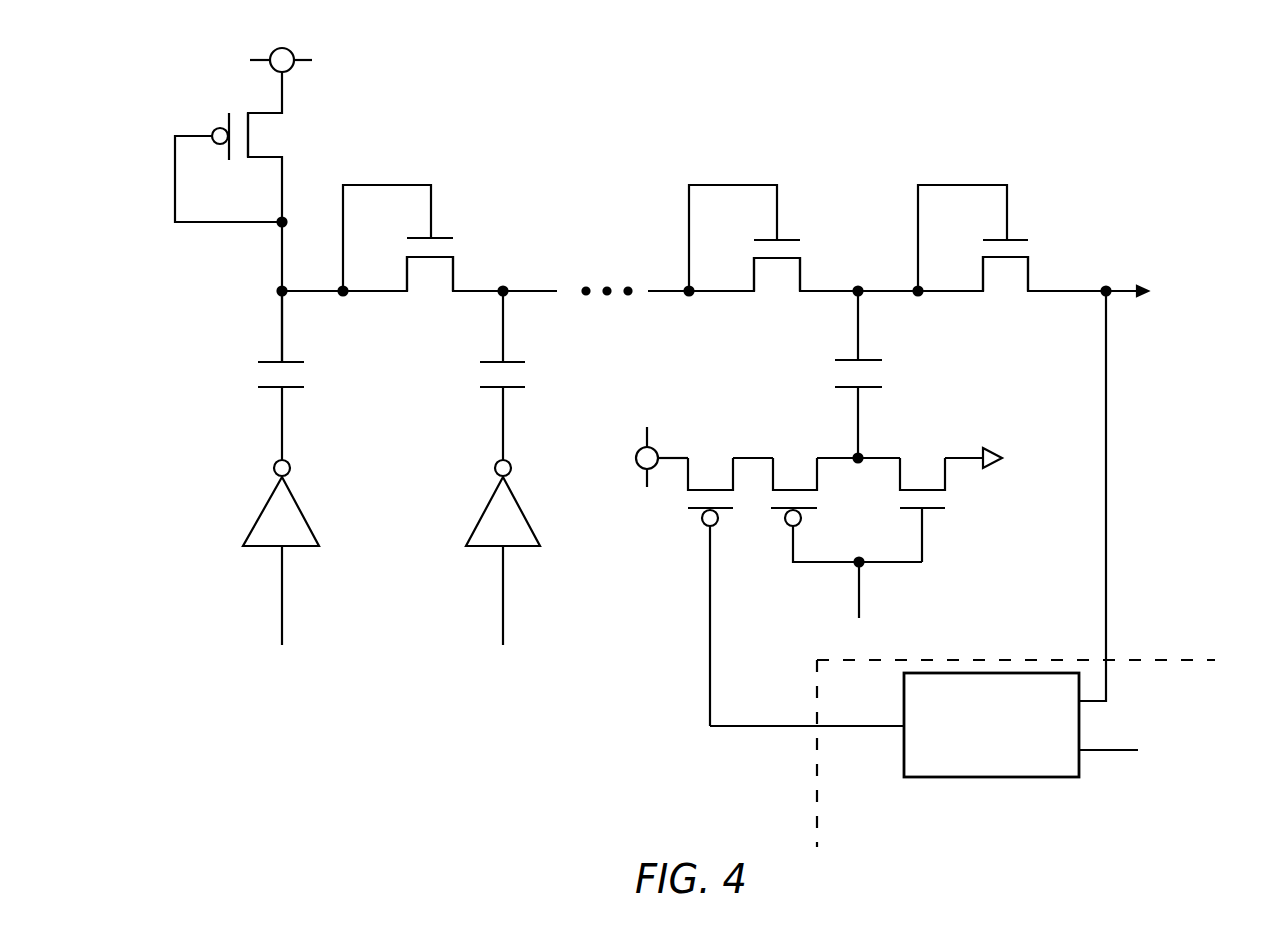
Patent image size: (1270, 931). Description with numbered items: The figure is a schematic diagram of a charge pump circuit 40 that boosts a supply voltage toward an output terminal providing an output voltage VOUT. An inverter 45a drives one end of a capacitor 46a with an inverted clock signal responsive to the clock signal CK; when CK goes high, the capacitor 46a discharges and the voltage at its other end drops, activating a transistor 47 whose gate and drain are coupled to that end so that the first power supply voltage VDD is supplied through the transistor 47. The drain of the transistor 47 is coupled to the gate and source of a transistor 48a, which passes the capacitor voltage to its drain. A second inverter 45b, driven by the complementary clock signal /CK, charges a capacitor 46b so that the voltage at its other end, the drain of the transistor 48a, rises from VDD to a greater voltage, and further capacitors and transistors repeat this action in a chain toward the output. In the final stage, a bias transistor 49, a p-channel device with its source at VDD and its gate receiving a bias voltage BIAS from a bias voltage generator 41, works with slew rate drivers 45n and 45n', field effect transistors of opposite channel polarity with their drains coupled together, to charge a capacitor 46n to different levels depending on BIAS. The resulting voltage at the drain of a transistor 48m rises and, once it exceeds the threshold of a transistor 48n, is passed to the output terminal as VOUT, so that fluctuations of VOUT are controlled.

The charge pump circuit 40 is at (1141, 99).
The bias voltage generator 41 is at (932, 778).
The inverter 45a is at (260, 512).
The inverter 45b is at (482, 512).
The slew rate driver 45n is at (825, 510).
The slew rate driver 45n' is at (944, 510).
The capacitor 46a is at (307, 372).
The capacitor 46b is at (528, 372).
The capacitor 46n is at (883, 372).
The transistor 47 is at (240, 117).
The transistor 48a is at (450, 250).
The transistor 48m is at (800, 249).
The transistor 48n is at (1028, 250).
The bias transistor 49 is at (708, 460).